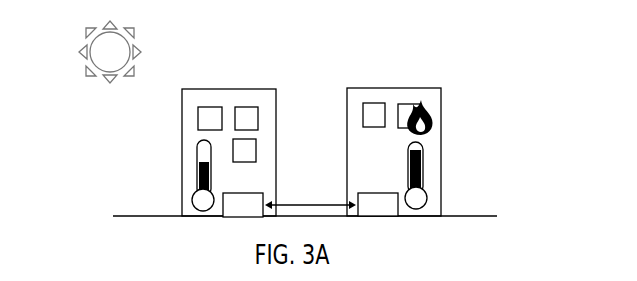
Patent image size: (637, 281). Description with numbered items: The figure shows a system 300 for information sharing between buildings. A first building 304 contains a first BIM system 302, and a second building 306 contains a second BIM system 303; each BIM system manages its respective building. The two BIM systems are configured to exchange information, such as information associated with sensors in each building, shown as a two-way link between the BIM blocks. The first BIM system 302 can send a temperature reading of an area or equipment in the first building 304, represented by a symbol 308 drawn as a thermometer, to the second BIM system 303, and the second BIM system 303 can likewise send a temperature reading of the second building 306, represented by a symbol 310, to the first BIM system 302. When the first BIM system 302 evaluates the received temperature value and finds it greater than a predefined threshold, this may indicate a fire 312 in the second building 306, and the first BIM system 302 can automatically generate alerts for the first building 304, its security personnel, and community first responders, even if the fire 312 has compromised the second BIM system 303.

The system 300 is at (66, 179).
The first BIM system 302 is at (263, 193).
The second BIM system 303 is at (358, 193).
The first building 304 is at (238, 89).
The second building 306 is at (407, 88).
The symbol 308 is at (197, 165).
The symbol 310 is at (423, 165).
The fire 312 is at (432, 117).